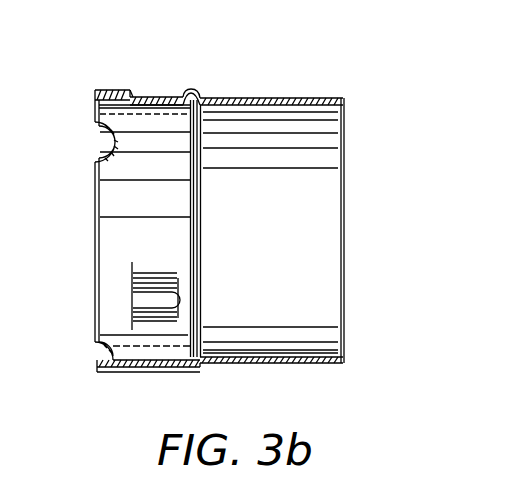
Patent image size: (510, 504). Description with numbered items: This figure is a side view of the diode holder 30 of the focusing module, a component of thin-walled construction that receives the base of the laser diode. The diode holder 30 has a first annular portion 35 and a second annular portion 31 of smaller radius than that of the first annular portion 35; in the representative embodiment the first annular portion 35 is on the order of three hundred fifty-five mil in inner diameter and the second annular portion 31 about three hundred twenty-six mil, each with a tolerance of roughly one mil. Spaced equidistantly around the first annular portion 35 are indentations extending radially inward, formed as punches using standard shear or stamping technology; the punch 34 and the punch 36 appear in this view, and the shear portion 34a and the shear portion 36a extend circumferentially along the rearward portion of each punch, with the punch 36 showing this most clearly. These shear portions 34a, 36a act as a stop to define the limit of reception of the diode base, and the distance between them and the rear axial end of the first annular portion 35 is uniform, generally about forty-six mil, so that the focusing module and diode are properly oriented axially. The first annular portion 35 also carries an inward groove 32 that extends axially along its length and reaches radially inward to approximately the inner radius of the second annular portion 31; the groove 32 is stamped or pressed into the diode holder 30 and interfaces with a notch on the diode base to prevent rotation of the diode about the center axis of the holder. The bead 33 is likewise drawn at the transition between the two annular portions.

The diode holder 30 is at (305, 67).
The second annular portion 31 is at (308, 361).
The groove 32 is at (166, 373).
The bead 33 is at (196, 89).
The punch 34 is at (163, 96).
The shear portion 34a is at (138, 94).
The first annular portion 35 is at (124, 89).
The punch 36 is at (142, 302).
The shear portion 36a is at (133, 292).